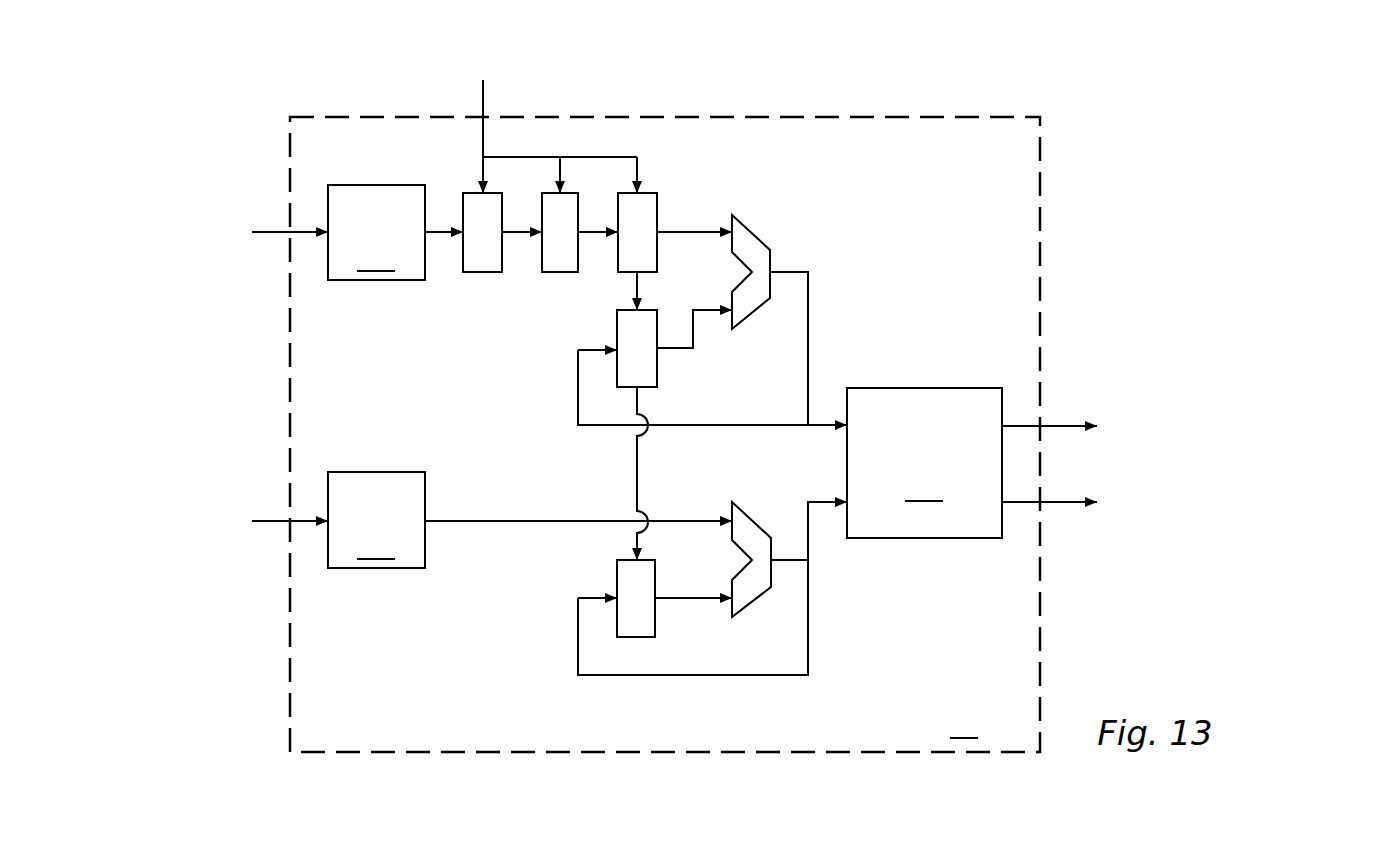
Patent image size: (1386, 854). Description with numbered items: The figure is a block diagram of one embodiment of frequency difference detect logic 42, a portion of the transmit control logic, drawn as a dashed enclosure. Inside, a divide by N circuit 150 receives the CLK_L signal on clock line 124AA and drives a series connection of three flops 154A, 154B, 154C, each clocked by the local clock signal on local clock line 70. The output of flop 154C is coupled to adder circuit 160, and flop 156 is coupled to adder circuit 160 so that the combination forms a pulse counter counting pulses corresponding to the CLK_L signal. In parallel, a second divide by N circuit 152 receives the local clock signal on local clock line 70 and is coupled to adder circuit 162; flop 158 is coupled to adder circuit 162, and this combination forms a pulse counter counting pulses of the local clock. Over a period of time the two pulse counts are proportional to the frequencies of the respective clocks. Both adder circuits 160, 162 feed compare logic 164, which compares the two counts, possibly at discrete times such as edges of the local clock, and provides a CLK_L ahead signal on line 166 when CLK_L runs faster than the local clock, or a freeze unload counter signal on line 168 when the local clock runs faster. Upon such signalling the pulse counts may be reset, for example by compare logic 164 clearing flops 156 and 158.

The frequency difference detect logic 42 is at (665, 434).
The local clock line 70 is at (383, 309).
The clock line 124AA is at (247, 250).
The divide by N circuit 150 is at (395, 232).
The divide by N circuit 152 is at (530, 520).
The flop 154A is at (459, 251).
The flop 154B is at (549, 251).
The flop 154C is at (675, 237).
The flop 156 is at (712, 435).
The flop 158 is at (692, 588).
The adder circuit 160 is at (776, 313).
The adder circuit 162 is at (776, 543).
The compare logic 164 is at (924, 463).
The line 166 is at (1124, 406).
The line 168 is at (1178, 521).